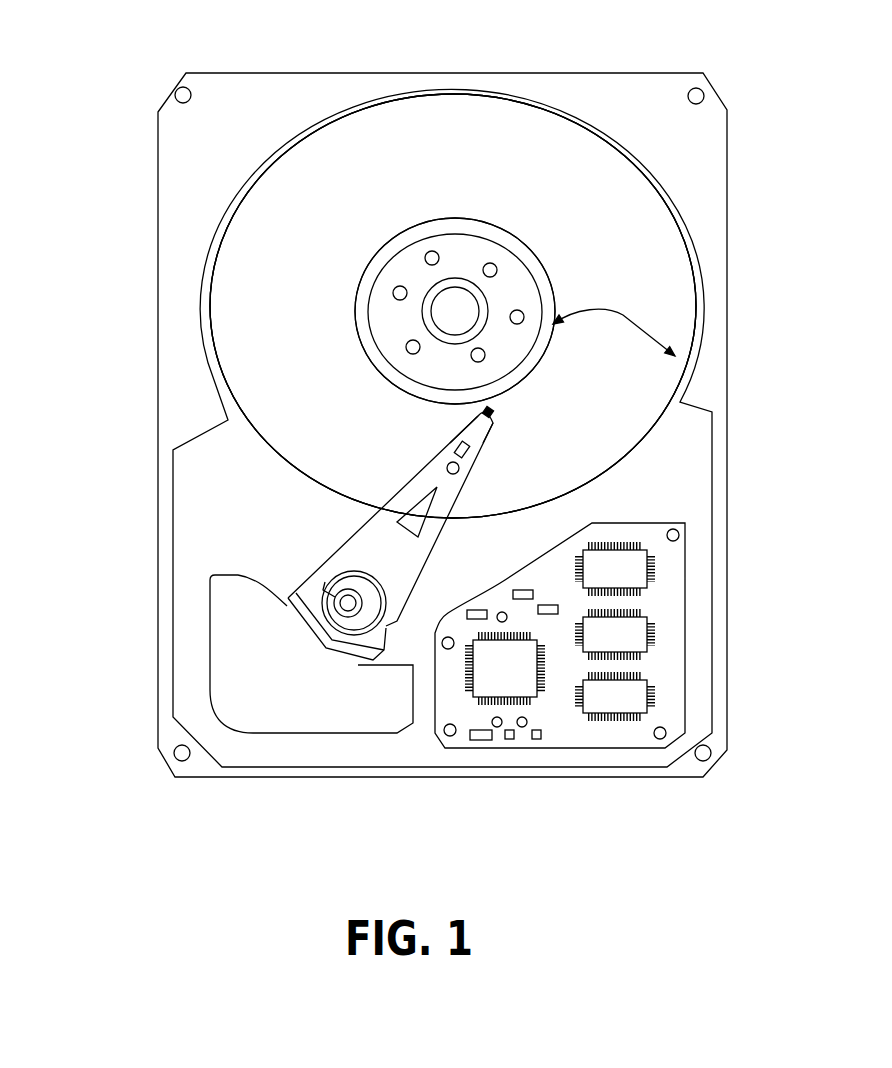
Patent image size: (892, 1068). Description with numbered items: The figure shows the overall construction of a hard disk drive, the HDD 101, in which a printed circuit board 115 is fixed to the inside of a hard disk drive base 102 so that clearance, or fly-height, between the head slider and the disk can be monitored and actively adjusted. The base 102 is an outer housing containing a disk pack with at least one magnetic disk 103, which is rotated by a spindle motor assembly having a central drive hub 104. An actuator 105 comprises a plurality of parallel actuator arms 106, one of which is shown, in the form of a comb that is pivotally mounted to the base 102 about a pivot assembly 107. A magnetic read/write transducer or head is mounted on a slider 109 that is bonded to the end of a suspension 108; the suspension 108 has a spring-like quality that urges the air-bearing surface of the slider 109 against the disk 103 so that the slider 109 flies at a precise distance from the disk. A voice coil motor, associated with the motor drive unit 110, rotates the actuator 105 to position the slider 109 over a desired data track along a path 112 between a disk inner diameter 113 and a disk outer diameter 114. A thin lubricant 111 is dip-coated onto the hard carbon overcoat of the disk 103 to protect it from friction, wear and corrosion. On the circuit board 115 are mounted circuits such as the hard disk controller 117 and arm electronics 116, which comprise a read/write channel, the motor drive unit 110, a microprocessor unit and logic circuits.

The HDD 101 is at (428, 72).
The hard disk drive base 102 is at (153, 462).
The magnetic disk 103 is at (322, 165).
The central drive hub 104 is at (388, 245).
The actuator 105 is at (287, 602).
The actuator arm 106 is at (430, 563).
The pivot assembly 107 is at (348, 604).
The suspension 108 is at (453, 443).
The slider 109 is at (497, 415).
The motor drive unit 110 is at (325, 650).
The lubricant 111 is at (540, 172).
The path 112 is at (623, 315).
The disk inner diameter 113 is at (355, 345).
The disk outer diameter 114 is at (233, 398).
The printed circuit board 115 is at (687, 562).
The arm electronics 116 is at (650, 633).
The hard disk controller 117 is at (650, 700).